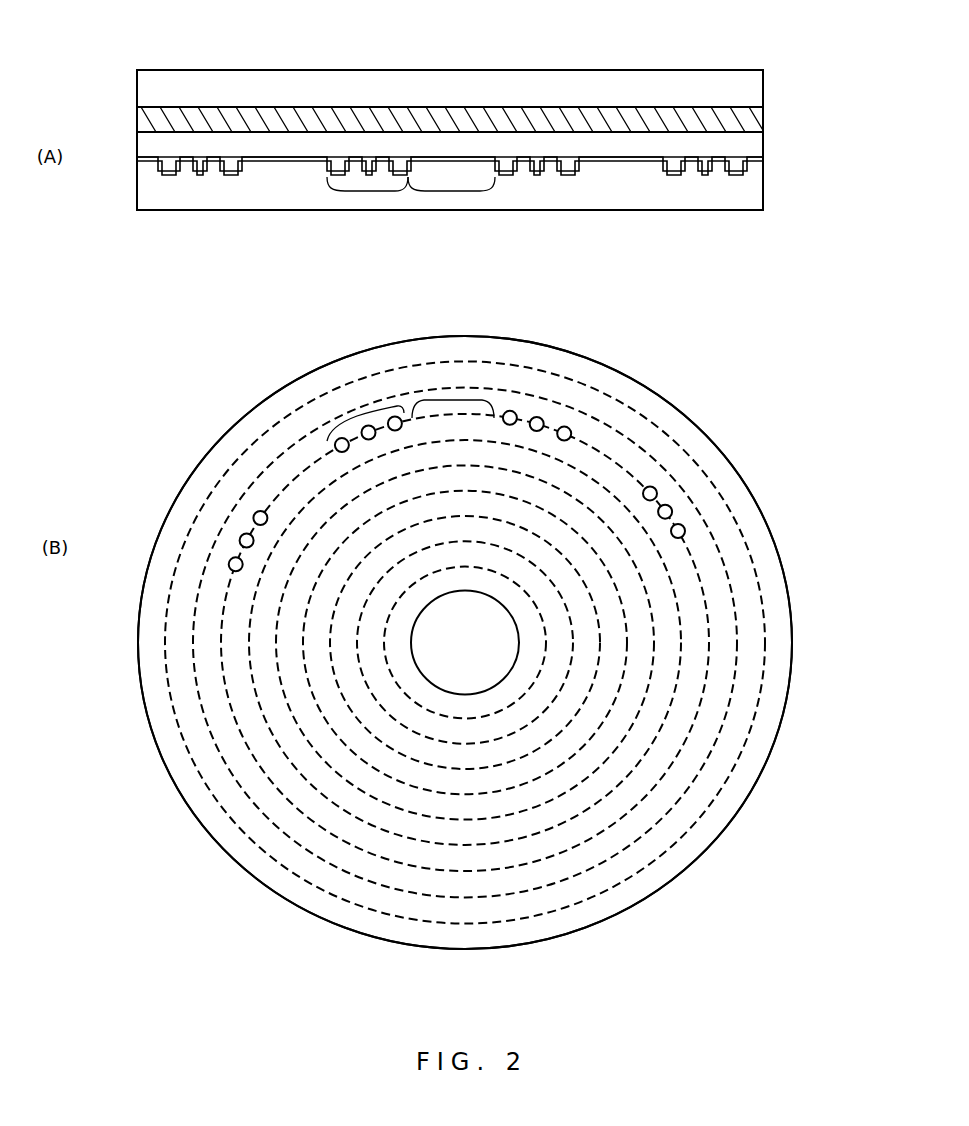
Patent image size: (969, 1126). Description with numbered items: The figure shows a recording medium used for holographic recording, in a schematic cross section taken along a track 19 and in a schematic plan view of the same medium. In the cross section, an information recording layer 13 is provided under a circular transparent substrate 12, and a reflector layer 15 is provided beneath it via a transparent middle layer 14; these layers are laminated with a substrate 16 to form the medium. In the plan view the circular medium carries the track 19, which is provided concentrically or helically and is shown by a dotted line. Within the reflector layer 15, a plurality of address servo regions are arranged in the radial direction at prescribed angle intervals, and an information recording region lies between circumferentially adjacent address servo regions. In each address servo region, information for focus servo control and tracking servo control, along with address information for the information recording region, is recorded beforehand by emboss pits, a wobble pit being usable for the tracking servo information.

The transparent substrate 12 is at (752, 93).
The information recording layer 13 is at (752, 121).
The transparent middle layer 14 is at (752, 149).
The reflector layer 15 is at (752, 176).
The substrate 16 is at (752, 201).
The track 19 is at (760, 589).